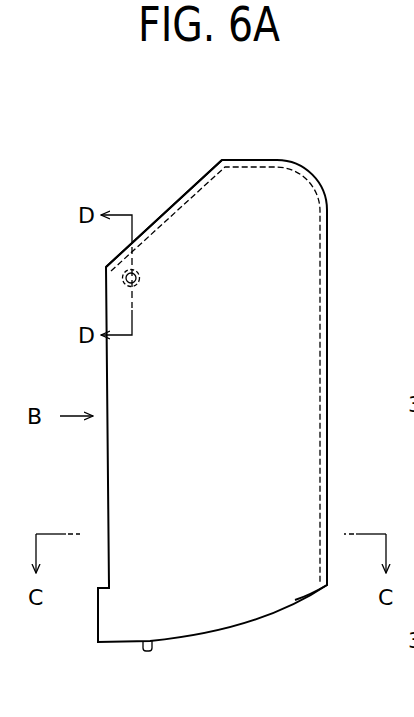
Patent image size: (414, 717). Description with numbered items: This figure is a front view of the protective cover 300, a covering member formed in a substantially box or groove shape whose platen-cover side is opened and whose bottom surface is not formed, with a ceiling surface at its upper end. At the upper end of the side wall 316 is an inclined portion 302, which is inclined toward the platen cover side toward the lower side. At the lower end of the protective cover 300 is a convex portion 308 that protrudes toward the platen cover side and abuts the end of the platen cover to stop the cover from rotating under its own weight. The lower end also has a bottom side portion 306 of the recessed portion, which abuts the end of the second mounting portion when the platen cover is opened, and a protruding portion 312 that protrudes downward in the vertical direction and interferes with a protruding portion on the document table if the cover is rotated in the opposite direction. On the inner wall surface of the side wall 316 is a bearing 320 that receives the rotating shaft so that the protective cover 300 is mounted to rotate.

The protective cover 300 is at (292, 159).
The inclined portion 302 is at (185, 196).
The bottom side portion 306 is at (328, 587).
The convex portion 308 is at (97, 618).
The protruding portion 312 is at (150, 653).
The side wall 316 is at (262, 372).
The bearing 320 is at (140, 278).